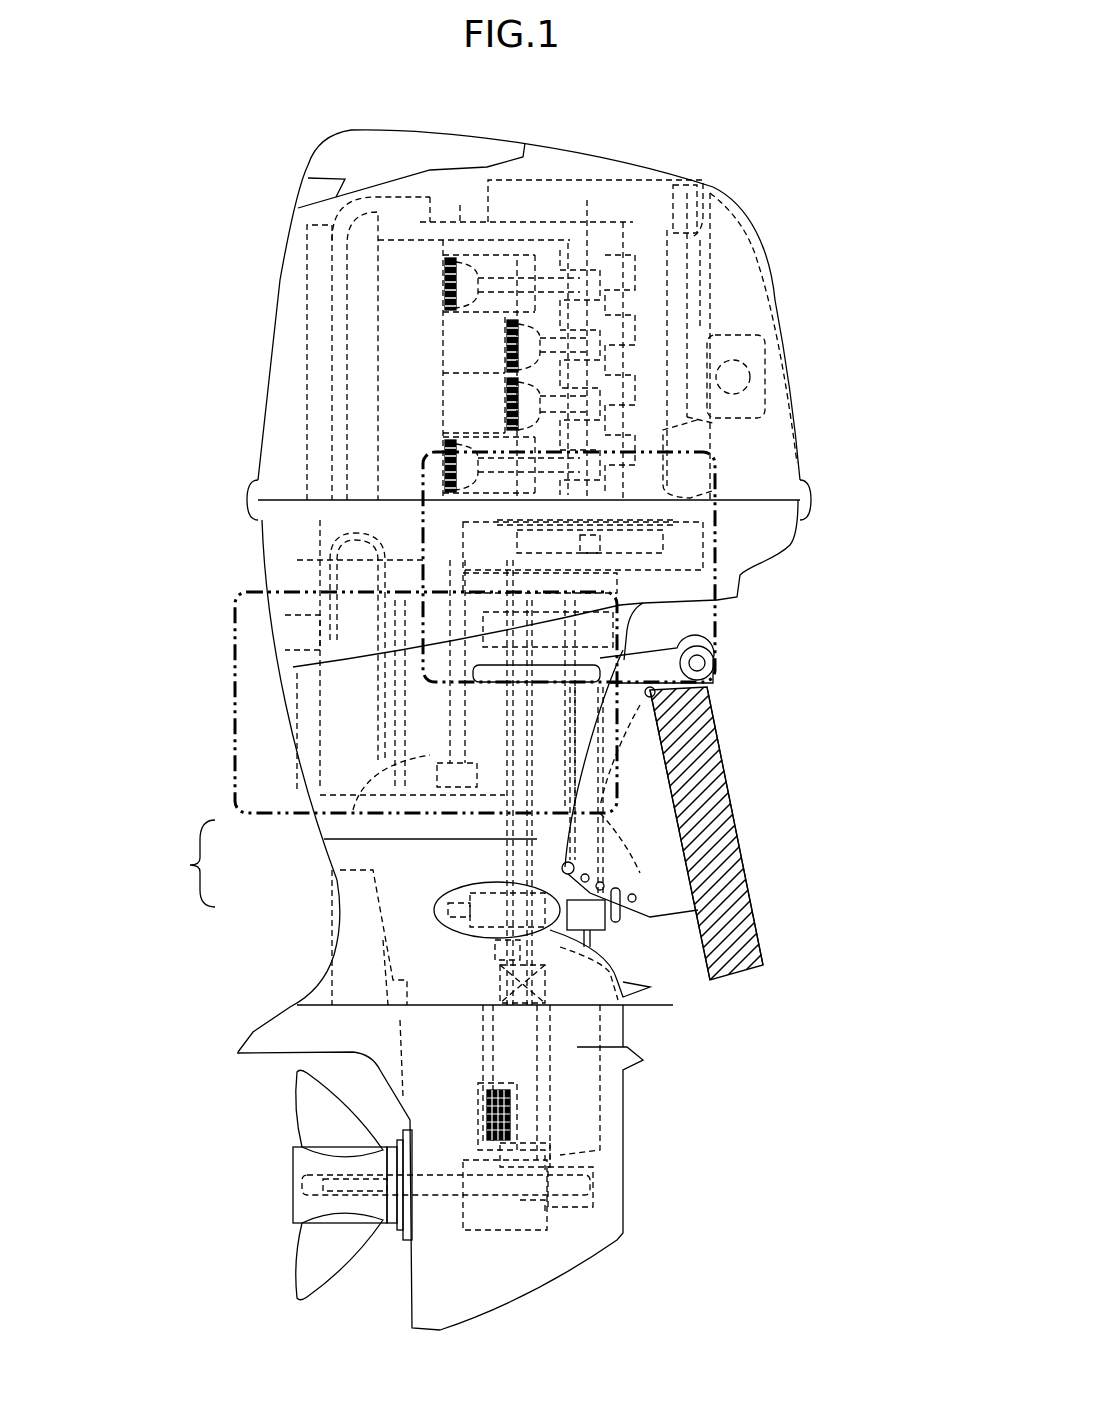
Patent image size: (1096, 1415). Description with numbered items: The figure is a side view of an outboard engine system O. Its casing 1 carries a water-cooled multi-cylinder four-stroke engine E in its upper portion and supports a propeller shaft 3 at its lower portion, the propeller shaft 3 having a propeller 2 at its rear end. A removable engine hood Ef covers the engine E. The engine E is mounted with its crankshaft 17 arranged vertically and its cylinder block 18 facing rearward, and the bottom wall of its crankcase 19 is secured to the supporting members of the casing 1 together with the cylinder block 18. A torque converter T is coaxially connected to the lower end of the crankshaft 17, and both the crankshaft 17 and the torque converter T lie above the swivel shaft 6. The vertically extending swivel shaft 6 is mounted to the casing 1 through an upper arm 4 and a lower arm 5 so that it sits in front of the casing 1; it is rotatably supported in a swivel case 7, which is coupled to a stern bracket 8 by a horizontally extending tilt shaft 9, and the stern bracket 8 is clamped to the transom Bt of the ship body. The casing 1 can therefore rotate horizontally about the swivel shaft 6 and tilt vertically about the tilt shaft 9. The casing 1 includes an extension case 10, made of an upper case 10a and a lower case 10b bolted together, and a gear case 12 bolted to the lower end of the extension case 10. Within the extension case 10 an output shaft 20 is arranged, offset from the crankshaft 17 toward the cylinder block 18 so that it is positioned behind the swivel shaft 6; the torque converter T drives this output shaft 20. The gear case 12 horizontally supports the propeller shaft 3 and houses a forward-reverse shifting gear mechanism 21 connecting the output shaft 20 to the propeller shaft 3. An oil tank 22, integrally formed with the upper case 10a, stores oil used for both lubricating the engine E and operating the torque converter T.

The outboard engine system O is at (755, 211).
The engine hood Ef is at (542, 143).
The engine E is at (640, 218).
The crankshaft 17 is at (587, 260).
The cylinder block 18 is at (517, 260).
The crankcase 19 is at (676, 437).
The torque converter T is at (630, 515).
The propeller 2 is at (716, 470).
The upper arm 4 is at (236, 637).
The casing 1 is at (291, 729).
The extension case 10 is at (186, 863).
The upper case 10a is at (342, 773).
The lower case 10b is at (400, 930).
The oil tank 22 is at (407, 763).
The swivel shaft 6 is at (638, 791).
The tilt shaft 9 is at (710, 663).
The swivel case 7 is at (597, 697).
The transom Bt is at (710, 718).
The stern bracket 8 is at (673, 847).
The lower arm 5 is at (450, 923).
The output shaft 20 is at (550, 940).
The gear case 12 is at (613, 1110).
The propeller shaft 3 is at (438, 1192).
The forward-reverse shifting gear mechanism 21 is at (520, 1203).